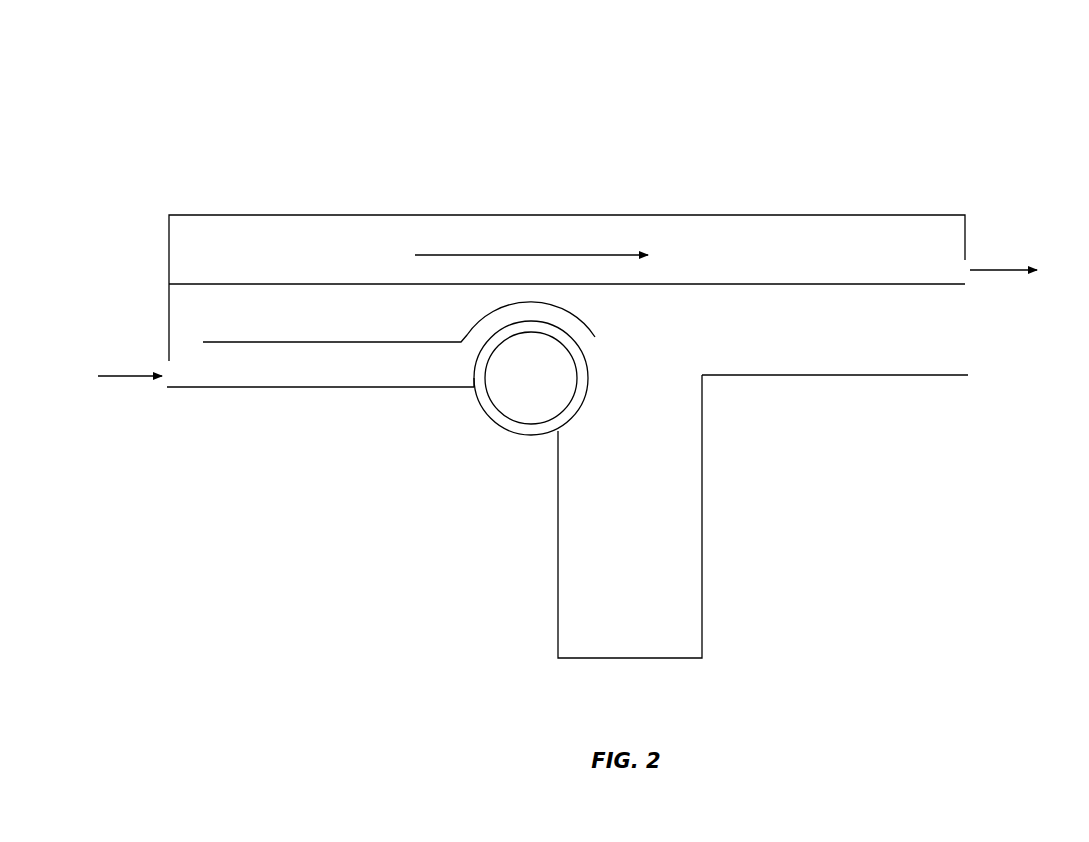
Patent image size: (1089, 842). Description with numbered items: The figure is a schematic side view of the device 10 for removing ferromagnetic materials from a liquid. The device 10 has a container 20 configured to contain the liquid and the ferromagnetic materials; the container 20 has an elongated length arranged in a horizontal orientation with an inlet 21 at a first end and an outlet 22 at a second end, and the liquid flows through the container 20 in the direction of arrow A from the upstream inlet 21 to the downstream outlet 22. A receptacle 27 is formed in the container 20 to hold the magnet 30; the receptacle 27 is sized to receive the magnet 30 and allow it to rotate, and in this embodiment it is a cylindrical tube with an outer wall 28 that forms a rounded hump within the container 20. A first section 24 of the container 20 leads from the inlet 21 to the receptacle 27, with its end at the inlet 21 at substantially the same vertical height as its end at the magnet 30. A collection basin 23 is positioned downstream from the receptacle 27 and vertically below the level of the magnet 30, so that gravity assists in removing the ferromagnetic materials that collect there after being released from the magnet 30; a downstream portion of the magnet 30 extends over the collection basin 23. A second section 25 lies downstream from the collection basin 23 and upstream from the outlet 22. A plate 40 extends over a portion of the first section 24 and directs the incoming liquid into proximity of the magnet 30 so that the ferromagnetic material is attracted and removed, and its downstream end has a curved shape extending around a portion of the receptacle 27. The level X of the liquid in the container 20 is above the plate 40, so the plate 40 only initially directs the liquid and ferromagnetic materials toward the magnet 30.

The device 10 is at (385, 117).
The container 20 is at (790, 212).
The inlet 21 is at (170, 368).
The outlet 22 is at (975, 257).
The collection basin 23 is at (685, 517).
The first section 24 is at (295, 389).
The second section 25 is at (823, 376).
The receptacle 27 is at (478, 408).
The outer wall 28 is at (475, 362).
The magnet 30 is at (510, 423).
The plate 40 is at (352, 342).
The level of the liquid X is at (297, 284).
The arrow A is at (518, 255).